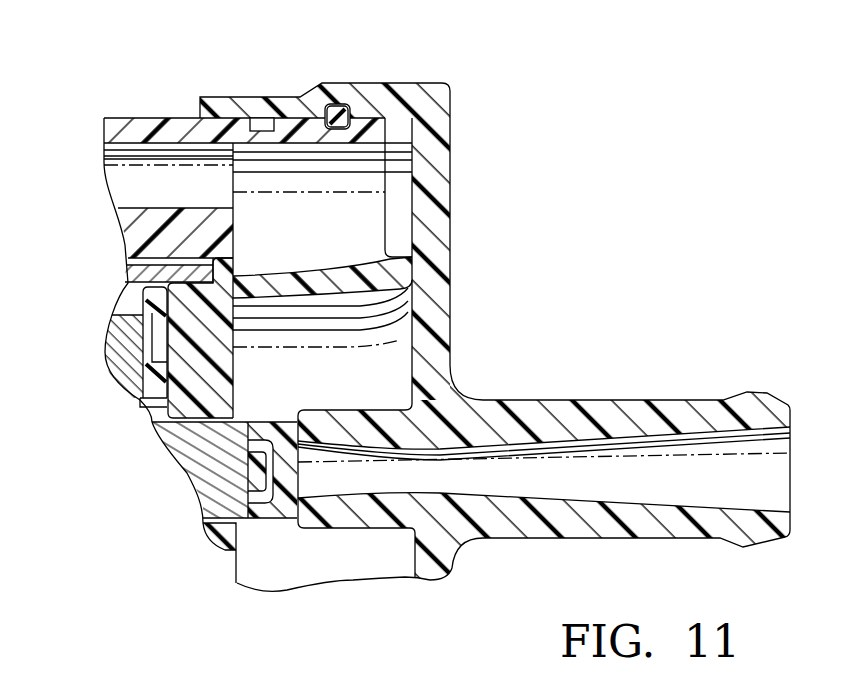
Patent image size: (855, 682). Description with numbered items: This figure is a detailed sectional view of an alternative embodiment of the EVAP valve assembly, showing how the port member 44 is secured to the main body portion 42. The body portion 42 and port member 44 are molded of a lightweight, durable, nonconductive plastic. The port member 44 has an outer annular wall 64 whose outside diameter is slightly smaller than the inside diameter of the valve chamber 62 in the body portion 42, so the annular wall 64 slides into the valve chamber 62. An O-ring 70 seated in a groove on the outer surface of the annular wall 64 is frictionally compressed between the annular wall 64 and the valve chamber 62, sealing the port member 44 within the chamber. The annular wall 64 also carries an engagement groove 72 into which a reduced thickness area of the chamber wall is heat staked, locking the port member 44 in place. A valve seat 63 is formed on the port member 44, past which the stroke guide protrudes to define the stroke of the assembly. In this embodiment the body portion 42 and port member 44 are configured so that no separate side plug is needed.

The main body portion 42 is at (131, 114).
The port member 44 is at (636, 395).
The valve chamber 62 is at (347, 222).
The valve seat 63 is at (325, 106).
The outer annular wall 64 is at (348, 88).
The O-ring 70 is at (327, 124).
The engagement groove 72 is at (336, 116).